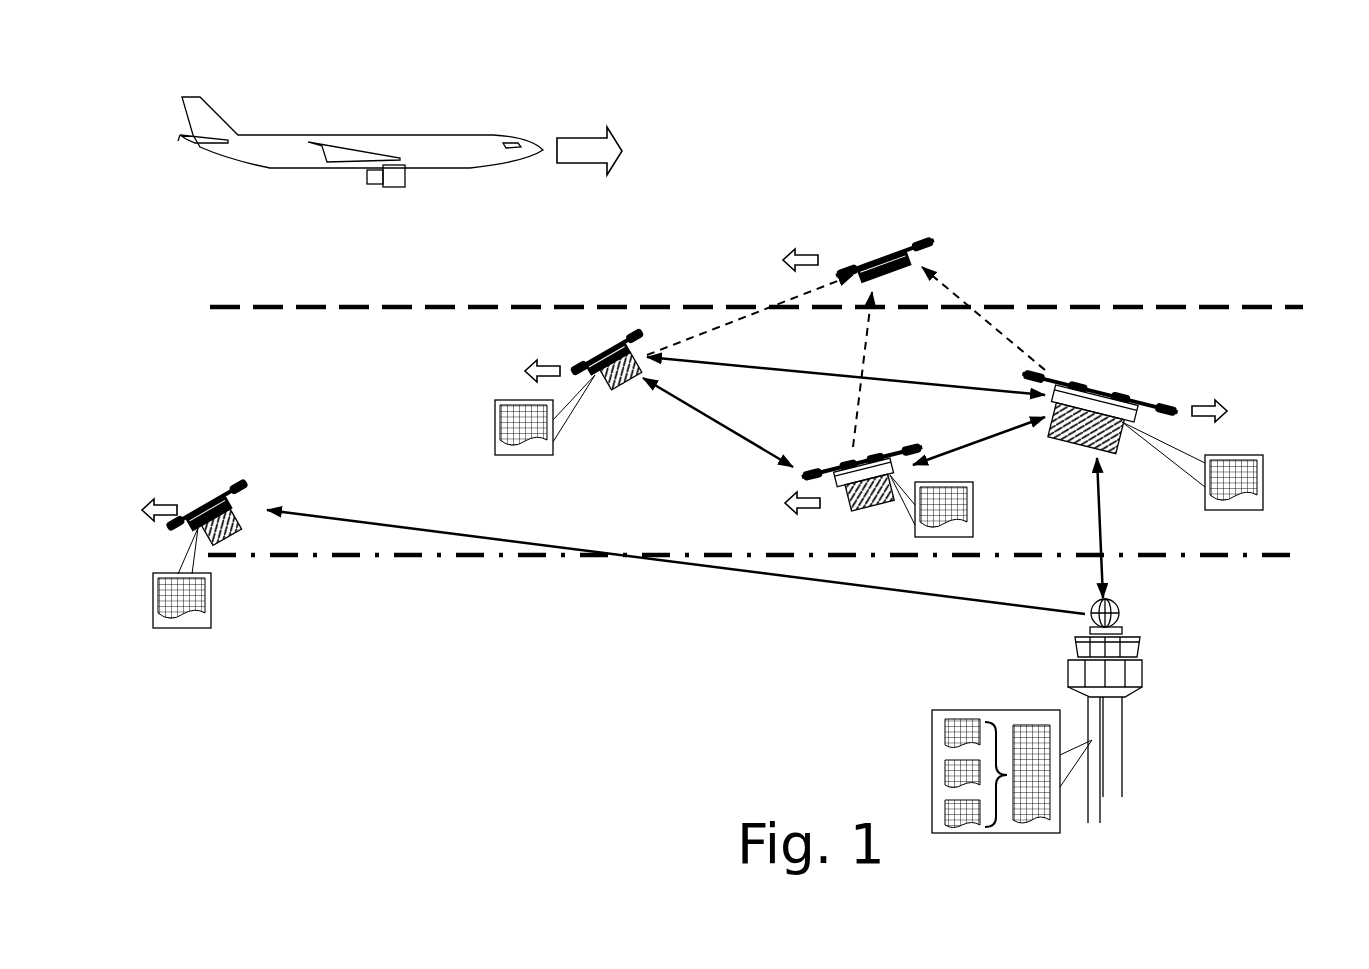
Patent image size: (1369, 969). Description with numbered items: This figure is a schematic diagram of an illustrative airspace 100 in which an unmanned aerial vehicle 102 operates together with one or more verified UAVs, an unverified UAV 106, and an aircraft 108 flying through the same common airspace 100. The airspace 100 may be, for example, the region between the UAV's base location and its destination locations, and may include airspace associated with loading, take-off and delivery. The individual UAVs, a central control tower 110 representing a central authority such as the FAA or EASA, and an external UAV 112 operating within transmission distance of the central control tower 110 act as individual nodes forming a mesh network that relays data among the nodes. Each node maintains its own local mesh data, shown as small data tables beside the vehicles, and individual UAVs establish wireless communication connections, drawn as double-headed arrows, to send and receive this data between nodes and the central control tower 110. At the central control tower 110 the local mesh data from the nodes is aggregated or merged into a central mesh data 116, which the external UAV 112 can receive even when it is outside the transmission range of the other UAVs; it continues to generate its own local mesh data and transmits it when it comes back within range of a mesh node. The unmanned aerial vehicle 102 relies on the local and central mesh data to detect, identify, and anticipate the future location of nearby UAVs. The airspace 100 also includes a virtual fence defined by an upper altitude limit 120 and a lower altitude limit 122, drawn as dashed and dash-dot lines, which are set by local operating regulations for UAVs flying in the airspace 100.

The airspace 100 is at (1066, 146).
The unmanned aerial vehicle 102 is at (1117, 388).
The unverified UAV 106 is at (873, 253).
The aircraft 108 is at (303, 168).
The central control tower 110 is at (1142, 672).
The external UAV 112 is at (237, 487).
The central mesh data 116 is at (960, 710).
The upper altitude limit 120 is at (1135, 307).
The lower altitude limit 122 is at (1202, 555).